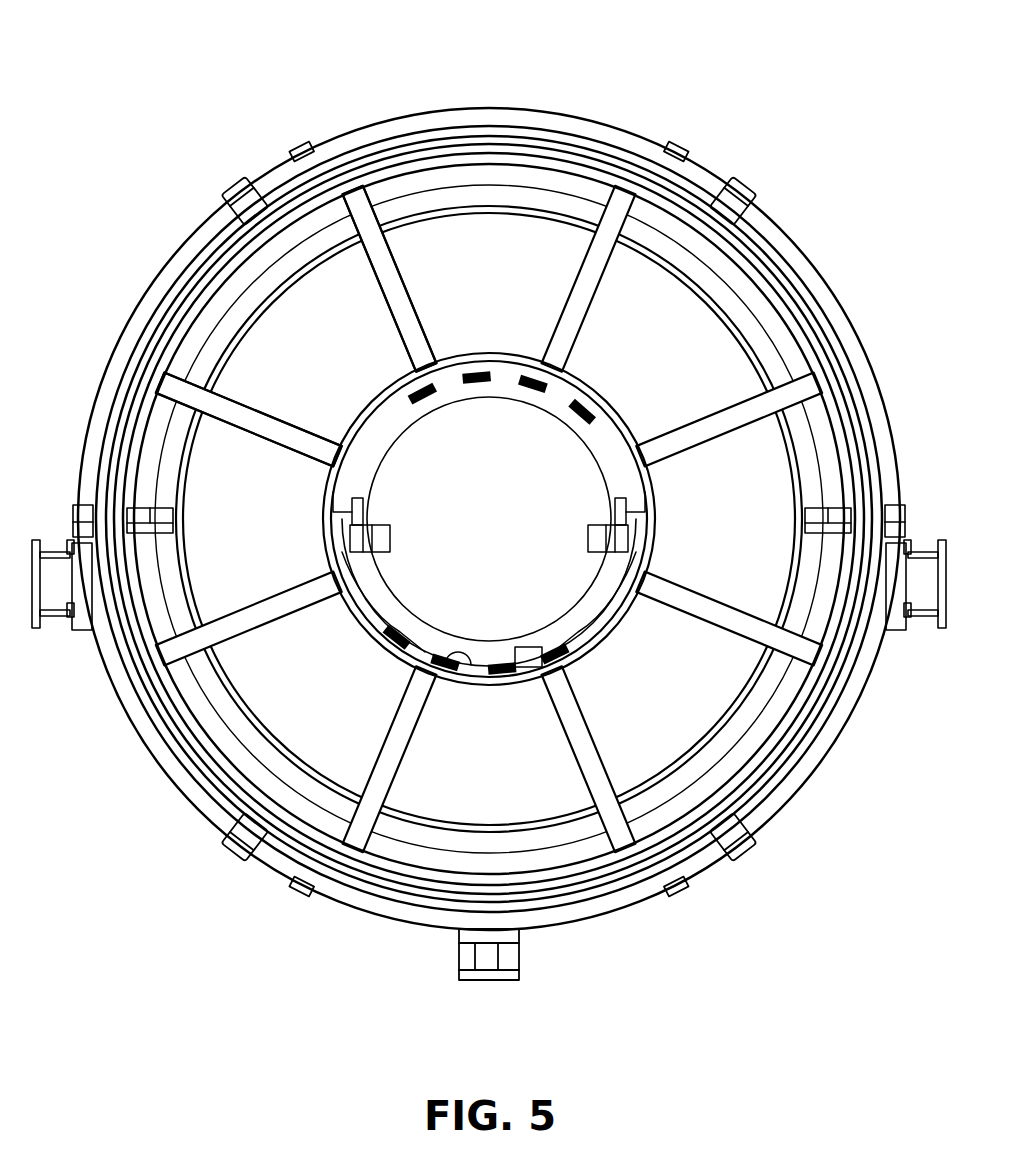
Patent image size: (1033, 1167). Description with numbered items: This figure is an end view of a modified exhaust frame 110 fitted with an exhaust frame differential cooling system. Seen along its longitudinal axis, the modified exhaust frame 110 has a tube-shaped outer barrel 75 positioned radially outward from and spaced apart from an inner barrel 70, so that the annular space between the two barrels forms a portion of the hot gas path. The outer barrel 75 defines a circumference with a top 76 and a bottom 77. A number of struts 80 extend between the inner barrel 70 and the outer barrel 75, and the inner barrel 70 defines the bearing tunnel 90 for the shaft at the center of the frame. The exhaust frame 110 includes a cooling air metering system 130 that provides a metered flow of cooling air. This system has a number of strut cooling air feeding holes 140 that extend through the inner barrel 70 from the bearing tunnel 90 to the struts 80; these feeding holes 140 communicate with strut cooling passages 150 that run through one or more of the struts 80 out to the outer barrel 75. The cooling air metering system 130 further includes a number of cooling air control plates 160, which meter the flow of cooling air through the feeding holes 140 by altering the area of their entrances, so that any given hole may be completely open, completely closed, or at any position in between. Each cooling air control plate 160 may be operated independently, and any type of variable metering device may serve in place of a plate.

The modified exhaust frame 110 is at (174, 179).
The top 76 is at (500, 106).
The outer barrel 75 is at (838, 299).
The bottom 77 is at (490, 979).
The inner barrel 70 is at (630, 421).
The struts 80 is at (398, 277).
The strut cooling passages 150 is at (386, 325).
The cooling air metering system 130 is at (590, 381).
The strut cooling air feeding holes 140 is at (532, 390).
The cooling air control plates 160 is at (516, 679).
The bearing tunnel 90 is at (507, 534).